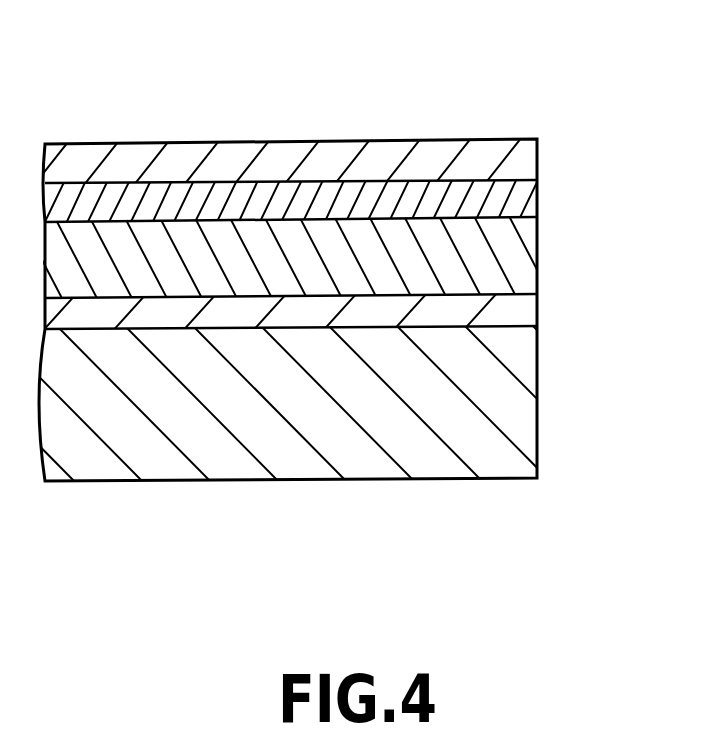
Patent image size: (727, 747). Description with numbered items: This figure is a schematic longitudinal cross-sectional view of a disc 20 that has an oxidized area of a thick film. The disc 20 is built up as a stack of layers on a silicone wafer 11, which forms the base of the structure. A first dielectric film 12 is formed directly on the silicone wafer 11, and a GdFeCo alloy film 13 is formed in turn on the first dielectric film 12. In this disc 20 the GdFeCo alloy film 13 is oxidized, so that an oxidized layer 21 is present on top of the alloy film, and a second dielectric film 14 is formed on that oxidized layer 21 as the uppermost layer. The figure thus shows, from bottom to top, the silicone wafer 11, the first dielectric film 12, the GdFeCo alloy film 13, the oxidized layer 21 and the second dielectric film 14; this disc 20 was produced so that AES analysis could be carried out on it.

The disc 20 is at (560, 106).
The second dielectric film 14 is at (522, 163).
The oxidized layer 21 is at (513, 202).
The GdFeCo alloy film 13 is at (522, 263).
The first dielectric film 12 is at (515, 315).
The silicone wafer 11 is at (512, 405).